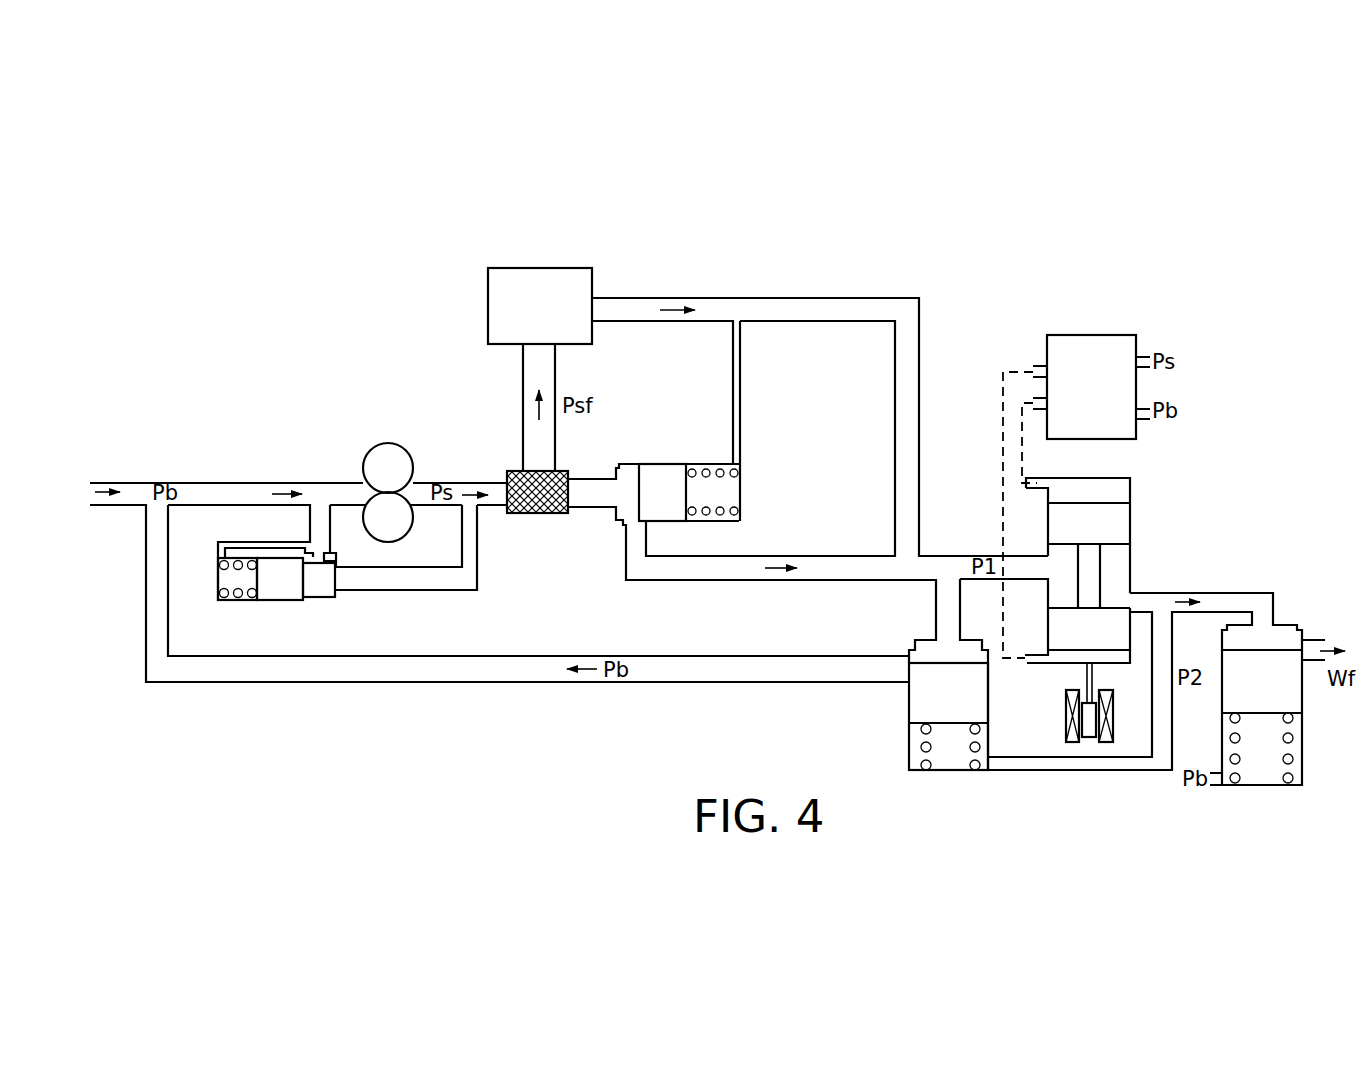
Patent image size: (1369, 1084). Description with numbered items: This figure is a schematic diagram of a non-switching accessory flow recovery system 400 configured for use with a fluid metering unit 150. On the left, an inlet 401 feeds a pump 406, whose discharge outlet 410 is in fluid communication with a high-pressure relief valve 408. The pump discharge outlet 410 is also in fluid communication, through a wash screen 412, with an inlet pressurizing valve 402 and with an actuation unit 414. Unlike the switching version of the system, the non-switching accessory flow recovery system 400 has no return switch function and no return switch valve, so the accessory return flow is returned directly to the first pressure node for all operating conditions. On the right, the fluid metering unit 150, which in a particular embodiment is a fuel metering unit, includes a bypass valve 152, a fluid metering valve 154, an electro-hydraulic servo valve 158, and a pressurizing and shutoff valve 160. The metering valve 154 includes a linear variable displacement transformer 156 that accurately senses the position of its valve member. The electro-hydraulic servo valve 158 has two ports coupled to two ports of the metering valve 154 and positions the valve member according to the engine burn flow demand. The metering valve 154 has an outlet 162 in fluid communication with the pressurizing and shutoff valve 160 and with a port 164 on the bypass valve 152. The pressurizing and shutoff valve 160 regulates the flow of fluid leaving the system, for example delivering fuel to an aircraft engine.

The non-switching accessory flow recovery system 400 is at (1025, 284).
The inlet 401 is at (86, 489).
The inlet pressurizing valve 402 is at (739, 494).
The pump 406 is at (366, 458).
The high-pressure relief valve 408 is at (317, 602).
The discharge outlet 410 is at (416, 487).
The wash screen 412 is at (553, 515).
The actuation unit 414 is at (548, 268).
The fluid metering unit 150 is at (1240, 501).
The bypass valve 152 is at (909, 758).
The fluid metering valve 154 is at (1130, 563).
The linear variable displacement transformer 156 is at (1066, 708).
The electro-hydraulic servo valve 158 is at (1098, 334).
The pressurizing and shutoff valve 160 is at (1302, 765).
The outlet 162 is at (1169, 596).
The port 164 is at (996, 769).